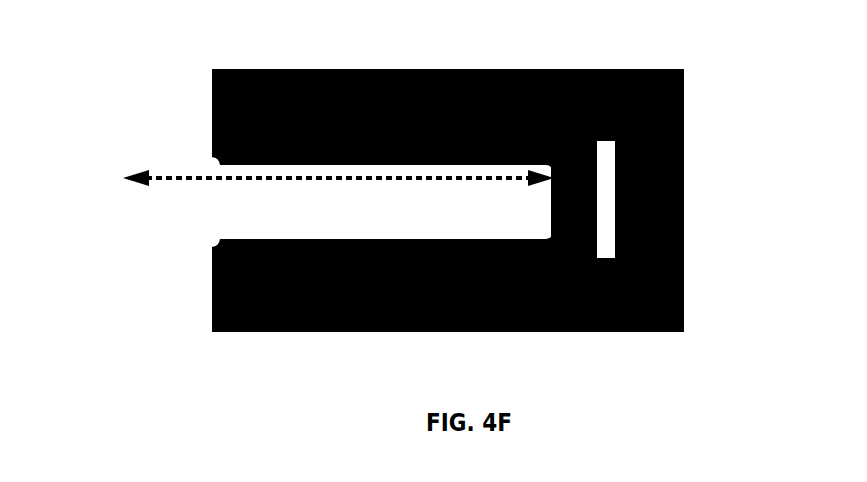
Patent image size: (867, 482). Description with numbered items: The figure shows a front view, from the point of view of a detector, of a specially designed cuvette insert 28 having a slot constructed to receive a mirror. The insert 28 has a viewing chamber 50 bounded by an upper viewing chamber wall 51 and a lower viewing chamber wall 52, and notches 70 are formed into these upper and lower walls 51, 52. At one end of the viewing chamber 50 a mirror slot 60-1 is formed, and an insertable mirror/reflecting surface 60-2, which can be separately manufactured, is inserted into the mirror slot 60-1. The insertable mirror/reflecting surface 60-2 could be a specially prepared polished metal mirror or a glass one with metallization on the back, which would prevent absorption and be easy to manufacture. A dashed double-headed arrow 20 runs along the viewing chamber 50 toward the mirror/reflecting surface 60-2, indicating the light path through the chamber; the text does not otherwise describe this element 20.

The cuvette insert 28 is at (177, 80).
The light beam 20 is at (336, 209).
The viewing chamber 50 is at (383, 202).
The upper viewing chamber wall 51 is at (298, 163).
The lower viewing chamber wall 52 is at (313, 239).
The notches 70 is at (550, 158).
The mirror slot 60-1 is at (597, 132).
The insertable mirror/reflecting surface 60-2 is at (563, 247).